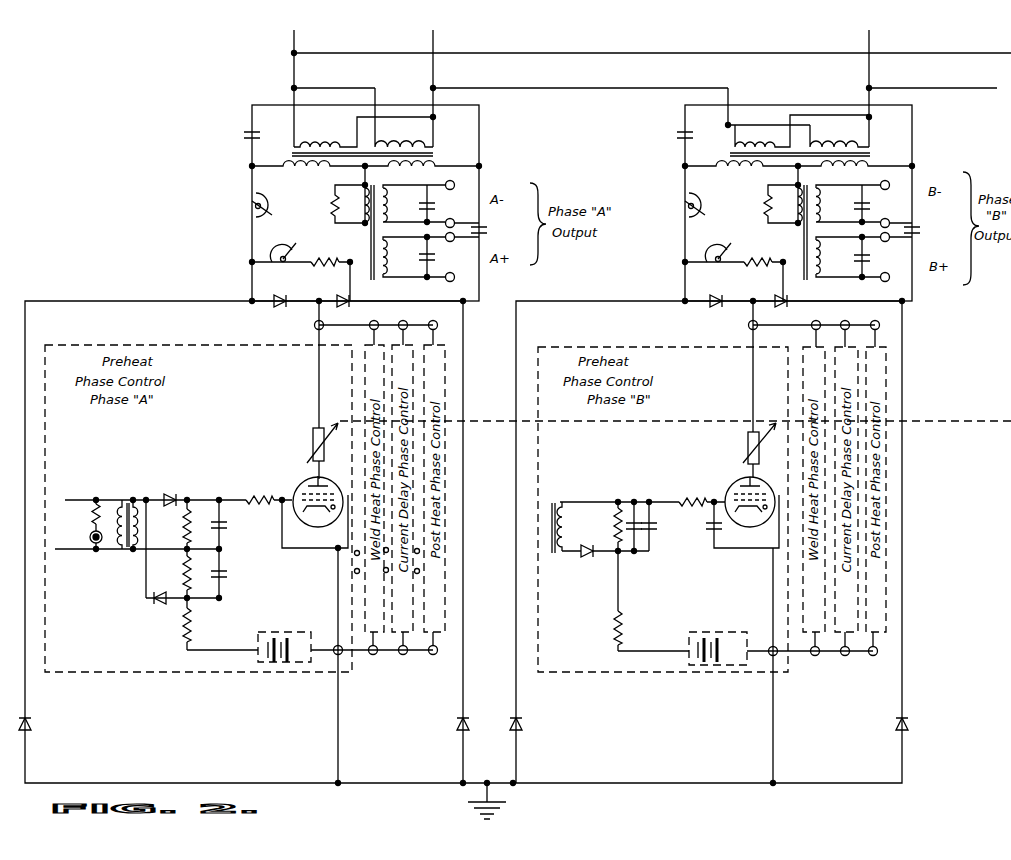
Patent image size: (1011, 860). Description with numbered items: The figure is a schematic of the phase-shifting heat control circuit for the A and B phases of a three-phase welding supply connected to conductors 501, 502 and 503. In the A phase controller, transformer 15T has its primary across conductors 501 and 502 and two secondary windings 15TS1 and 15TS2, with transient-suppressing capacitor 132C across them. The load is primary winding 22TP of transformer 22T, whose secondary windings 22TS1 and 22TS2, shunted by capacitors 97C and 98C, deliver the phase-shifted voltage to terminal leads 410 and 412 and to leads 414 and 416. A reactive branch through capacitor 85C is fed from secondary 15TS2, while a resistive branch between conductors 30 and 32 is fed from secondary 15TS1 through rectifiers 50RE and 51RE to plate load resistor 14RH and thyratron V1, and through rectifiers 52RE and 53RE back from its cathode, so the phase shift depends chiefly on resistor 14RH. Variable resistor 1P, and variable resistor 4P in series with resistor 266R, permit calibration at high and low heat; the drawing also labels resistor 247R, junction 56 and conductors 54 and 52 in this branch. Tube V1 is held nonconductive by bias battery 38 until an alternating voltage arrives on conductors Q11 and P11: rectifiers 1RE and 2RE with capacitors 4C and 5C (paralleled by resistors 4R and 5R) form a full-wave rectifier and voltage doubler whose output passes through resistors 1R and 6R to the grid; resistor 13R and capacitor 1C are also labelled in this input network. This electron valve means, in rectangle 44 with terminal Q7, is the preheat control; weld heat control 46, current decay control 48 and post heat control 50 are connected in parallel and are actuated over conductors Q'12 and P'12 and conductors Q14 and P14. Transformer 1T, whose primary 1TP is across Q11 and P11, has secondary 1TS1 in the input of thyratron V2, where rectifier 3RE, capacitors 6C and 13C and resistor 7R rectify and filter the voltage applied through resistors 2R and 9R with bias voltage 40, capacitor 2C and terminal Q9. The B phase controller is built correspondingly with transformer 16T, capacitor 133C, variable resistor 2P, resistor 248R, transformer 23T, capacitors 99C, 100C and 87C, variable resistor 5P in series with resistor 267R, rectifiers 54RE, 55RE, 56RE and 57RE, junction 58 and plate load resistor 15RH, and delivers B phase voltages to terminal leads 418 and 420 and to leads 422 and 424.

The conductor 501 is at (296, 41).
The conductor 502 is at (435, 41).
The conductor 503 is at (867, 41).
The conductor 30 is at (396, 299).
The transformer 15T is at (438, 150).
The secondary winding 15TS1 is at (280, 165).
The secondary winding 15TS2 is at (438, 166).
The transient suppressing capacitor 132C is at (250, 136).
The variable resistor 1P is at (266, 196).
The resistor 247R is at (335, 204).
The primary winding 22TP is at (358, 220).
The transformer 22T is at (370, 282).
The transformer secondary winding 22TS2 is at (414, 198).
The transient suppressing capacitor 97C is at (443, 203).
The conductor 410 is at (455, 185).
The conductor 412 is at (455, 222).
The capacitor 85C is at (489, 229).
The conductor 414 is at (455, 238).
The conductor 416 is at (455, 277).
The transient suppressing capacitor 98C is at (443, 257).
The transformer secondary winding 22TS1 is at (414, 257).
The variable resistor 4P is at (272, 256).
The resistor 266R is at (318, 268).
The rectifier 50RE is at (292, 306).
The rectifier 51RE is at (345, 306).
The conductor 32 is at (263, 298).
The capacitor 133C is at (682, 135).
The transformer 16T is at (858, 156).
The variable resistor 2P is at (697, 200).
The resistor 248R is at (768, 205).
The transformer 23T is at (803, 283).
The capacitor 99C is at (850, 203).
The capacitor 100C is at (849, 257).
The conductor 418 is at (890, 183).
The conductor 420 is at (890, 225).
The capacitor 87C is at (923, 229).
The conductor 422 is at (890, 238).
The conductor 424 is at (890, 277).
The variable resistor 5P is at (707, 257).
The resistor 267R is at (760, 268).
The rectifier 54RE is at (724, 306).
The rectifier 55RE is at (790, 306).
The junction node 56 is at (314, 327).
The conductor 54 is at (319, 372).
The plate load resistor 14RH is at (312, 437).
The conductor 52 is at (316, 458).
The thyratron V1 is at (322, 478).
The resistor 1R is at (258, 486).
The conductor Q11 is at (72, 498).
The resistor 13R is at (91, 511).
The transformer 1T is at (122, 505).
The primary winding 1TP is at (140, 522).
The conductor P11 is at (55, 549).
The rectifier 1RE is at (170, 492).
The resistor 4R is at (183, 537).
The resistor 5R is at (184, 572).
The resistor 6R is at (183, 630).
The rectifier 2RE is at (163, 617).
The capacitor 4C is at (226, 522).
The capacitor 1C is at (281, 525).
The capacitor 5C is at (225, 578).
The bias battery 38 is at (285, 630).
The preheat phase control 44 is at (165, 676).
The terminal Q7 is at (336, 655).
The weld heat phase control 46 is at (378, 670).
The current decay phase control 48 is at (415, 663).
The post heat phase control 50 is at (444, 632).
The conductor Q'12 is at (320, 558).
The conductor P'12 is at (321, 574).
The conductor Q14 is at (420, 553).
The conductor P14 is at (420, 573).
The rectifier 52RE is at (32, 724).
The rectifier 53RE is at (455, 724).
The rectifier 56RE is at (562, 704).
The rectifier 57RE is at (897, 725).
The junction node 58 is at (748, 326).
The plate load resistor 15RH is at (746, 442).
The thyratron V2 is at (755, 480).
The secondary winding 1TS1 is at (578, 502).
The resistor 7R is at (613, 518).
The resistor 9R is at (614, 624).
The rectifier 3RE is at (590, 556).
The capacitor 13C is at (636, 502).
The capacitor 6C is at (656, 522).
The grid-current-limiting resistor 2R is at (694, 500).
The capacitor 2C is at (708, 532).
The bias voltage 40 is at (722, 632).
The terminal Q9 is at (768, 655).